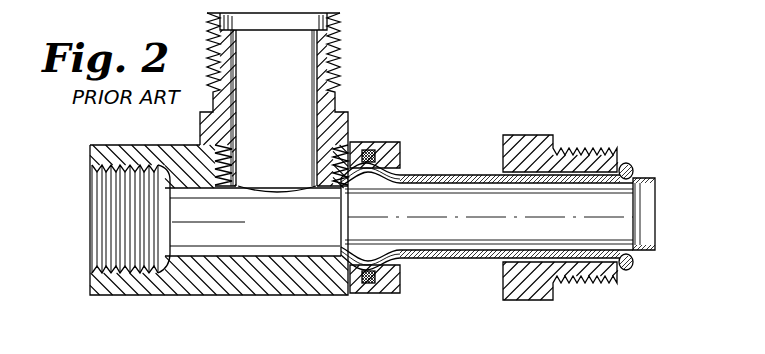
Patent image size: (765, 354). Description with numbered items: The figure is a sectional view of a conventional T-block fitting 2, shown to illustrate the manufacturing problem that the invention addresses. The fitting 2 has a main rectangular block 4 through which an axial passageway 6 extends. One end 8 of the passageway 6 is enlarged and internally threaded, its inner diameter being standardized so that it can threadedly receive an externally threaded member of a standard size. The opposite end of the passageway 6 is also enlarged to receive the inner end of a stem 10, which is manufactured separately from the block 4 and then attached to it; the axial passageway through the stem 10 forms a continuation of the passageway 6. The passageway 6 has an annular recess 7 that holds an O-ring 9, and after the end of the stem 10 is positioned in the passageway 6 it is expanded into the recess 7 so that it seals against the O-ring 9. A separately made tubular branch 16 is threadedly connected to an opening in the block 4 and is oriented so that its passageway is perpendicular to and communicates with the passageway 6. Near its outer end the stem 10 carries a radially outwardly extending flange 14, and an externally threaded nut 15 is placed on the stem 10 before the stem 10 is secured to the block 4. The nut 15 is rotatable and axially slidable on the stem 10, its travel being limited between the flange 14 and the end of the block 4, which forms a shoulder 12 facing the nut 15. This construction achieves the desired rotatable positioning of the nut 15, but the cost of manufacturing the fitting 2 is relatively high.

The T-block fitting 2 is at (490, 105).
The main rectangular block 4 is at (200, 296).
The axial passageway 6 is at (297, 230).
The annular recess 7 is at (372, 182).
The passageway end 8 is at (108, 262).
The O-ring 9 is at (366, 150).
The stem 10 is at (432, 175).
The shoulder 12 is at (404, 280).
The flange 14 is at (627, 164).
The externally threaded nut 15 is at (535, 134).
The tubular branch 16 is at (340, 64).